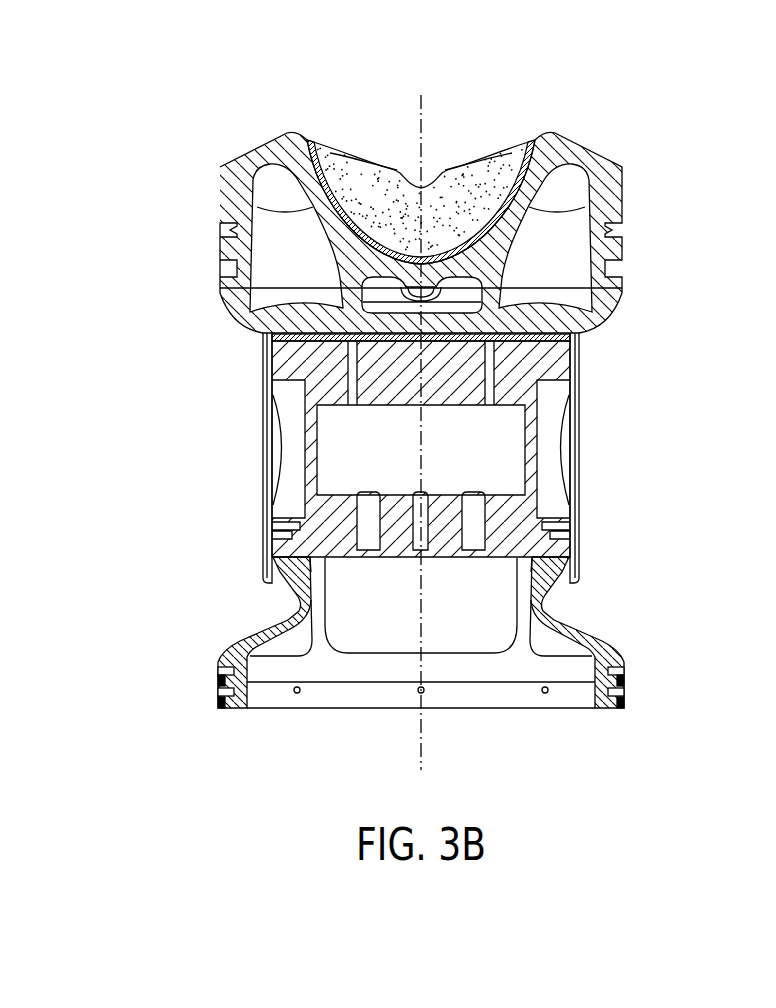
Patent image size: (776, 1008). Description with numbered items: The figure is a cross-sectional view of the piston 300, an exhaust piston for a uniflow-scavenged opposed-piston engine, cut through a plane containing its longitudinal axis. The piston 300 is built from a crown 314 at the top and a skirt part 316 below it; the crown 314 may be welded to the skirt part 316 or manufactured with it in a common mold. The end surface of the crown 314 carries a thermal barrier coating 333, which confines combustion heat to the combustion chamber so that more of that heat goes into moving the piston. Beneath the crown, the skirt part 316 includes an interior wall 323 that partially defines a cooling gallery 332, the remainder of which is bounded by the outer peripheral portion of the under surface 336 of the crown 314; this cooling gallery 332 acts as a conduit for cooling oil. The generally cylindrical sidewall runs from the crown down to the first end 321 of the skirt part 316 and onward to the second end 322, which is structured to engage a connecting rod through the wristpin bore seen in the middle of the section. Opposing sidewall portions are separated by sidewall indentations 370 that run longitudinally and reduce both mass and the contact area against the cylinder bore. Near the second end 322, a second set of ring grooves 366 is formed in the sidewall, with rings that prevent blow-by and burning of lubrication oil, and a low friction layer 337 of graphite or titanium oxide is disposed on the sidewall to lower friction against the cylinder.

The piston 300 is at (238, 134).
The crown 314 is at (347, 163).
The thermal barrier coating 333 is at (537, 148).
The under surface 336 is at (257, 207).
The cooling gallery 332 is at (278, 240).
The first end 321 is at (625, 290).
The interior wall 323 is at (262, 313).
The skirt part 316 is at (601, 422).
The sidewall indentations 370 is at (250, 582).
The second set of ring grooves 366 is at (216, 652).
The low friction layer 337 is at (627, 701).
The second end 322 is at (383, 718).